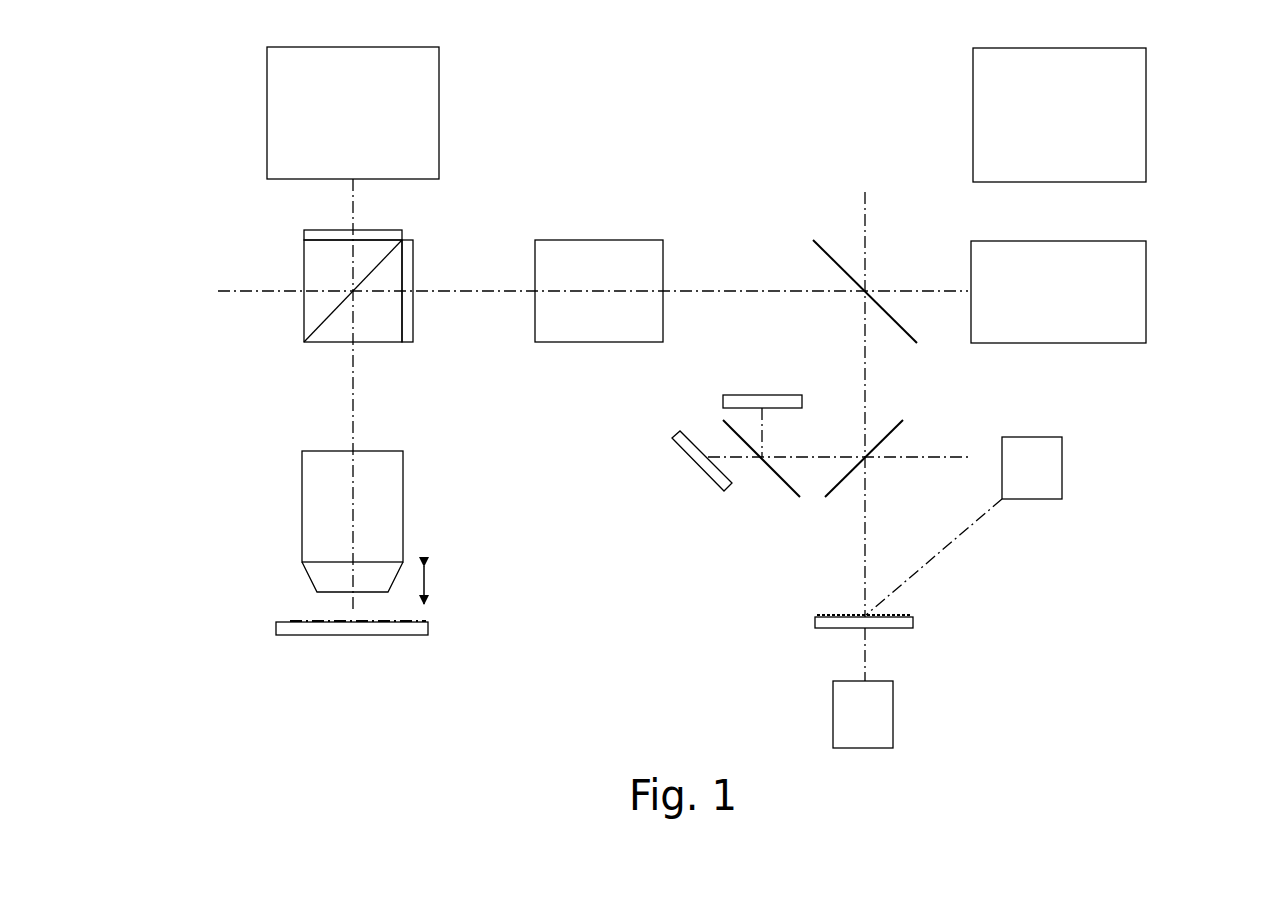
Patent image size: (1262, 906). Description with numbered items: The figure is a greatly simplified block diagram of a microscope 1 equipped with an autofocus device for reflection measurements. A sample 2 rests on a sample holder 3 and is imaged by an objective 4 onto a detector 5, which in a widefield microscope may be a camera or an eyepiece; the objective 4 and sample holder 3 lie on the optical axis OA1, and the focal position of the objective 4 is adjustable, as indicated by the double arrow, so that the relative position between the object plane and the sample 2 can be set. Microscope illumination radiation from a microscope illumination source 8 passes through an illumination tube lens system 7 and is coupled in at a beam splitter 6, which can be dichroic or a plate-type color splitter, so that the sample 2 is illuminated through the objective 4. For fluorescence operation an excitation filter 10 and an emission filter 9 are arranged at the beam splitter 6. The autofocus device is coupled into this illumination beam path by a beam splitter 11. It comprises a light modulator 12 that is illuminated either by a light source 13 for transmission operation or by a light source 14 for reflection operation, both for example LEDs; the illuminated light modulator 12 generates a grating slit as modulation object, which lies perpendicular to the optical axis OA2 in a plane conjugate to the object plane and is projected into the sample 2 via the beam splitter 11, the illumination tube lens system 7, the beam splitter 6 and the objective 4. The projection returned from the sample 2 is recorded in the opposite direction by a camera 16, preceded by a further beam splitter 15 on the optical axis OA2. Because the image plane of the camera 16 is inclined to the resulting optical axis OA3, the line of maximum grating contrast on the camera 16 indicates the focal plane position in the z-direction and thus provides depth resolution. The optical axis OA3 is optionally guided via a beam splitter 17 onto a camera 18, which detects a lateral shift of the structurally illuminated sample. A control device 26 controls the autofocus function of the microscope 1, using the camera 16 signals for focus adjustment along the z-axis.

The microscope 1 is at (592, 106).
The sample 2 is at (308, 622).
The sample holder 3 is at (276, 627).
The objective 4 is at (403, 484).
The detector 5 is at (267, 107).
The beam splitter 6 is at (304, 270).
The illumination tube lens system 7 is at (625, 240).
The microscope illumination source 8 is at (1146, 283).
The emission filter 9 is at (394, 230).
The excitation filter 10 is at (413, 326).
The beam splitter 11 is at (839, 260).
The light modulator 12 is at (913, 621).
The light source 13 is at (893, 710).
The light source 14 is at (1062, 462).
The beam splitter 15 is at (893, 428).
The camera 16 is at (687, 458).
The beam splitter 17 is at (792, 488).
The camera 18 is at (723, 406).
The control device 26 is at (1146, 105).
The optical axis OA1 is at (352, 388).
The optical axis OA2 is at (863, 341).
The optical axis OA3 is at (812, 457).